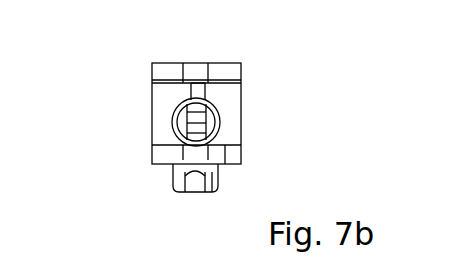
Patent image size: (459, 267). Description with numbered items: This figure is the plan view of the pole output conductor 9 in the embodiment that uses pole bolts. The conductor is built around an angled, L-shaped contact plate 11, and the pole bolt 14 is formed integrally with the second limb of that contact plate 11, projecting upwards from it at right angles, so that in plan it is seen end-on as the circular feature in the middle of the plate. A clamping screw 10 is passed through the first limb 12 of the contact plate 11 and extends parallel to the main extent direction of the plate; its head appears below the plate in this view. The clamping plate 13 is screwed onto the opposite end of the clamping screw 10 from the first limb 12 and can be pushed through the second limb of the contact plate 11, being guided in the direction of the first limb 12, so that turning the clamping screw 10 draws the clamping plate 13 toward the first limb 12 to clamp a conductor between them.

The pole output conductor 9 is at (283, 56).
The clamping screw 10 is at (214, 176).
The angled contact plate 11 is at (149, 95).
The first limb 12 is at (233, 161).
The clamping plate 13 is at (183, 64).
The pole bolt 14 is at (192, 123).